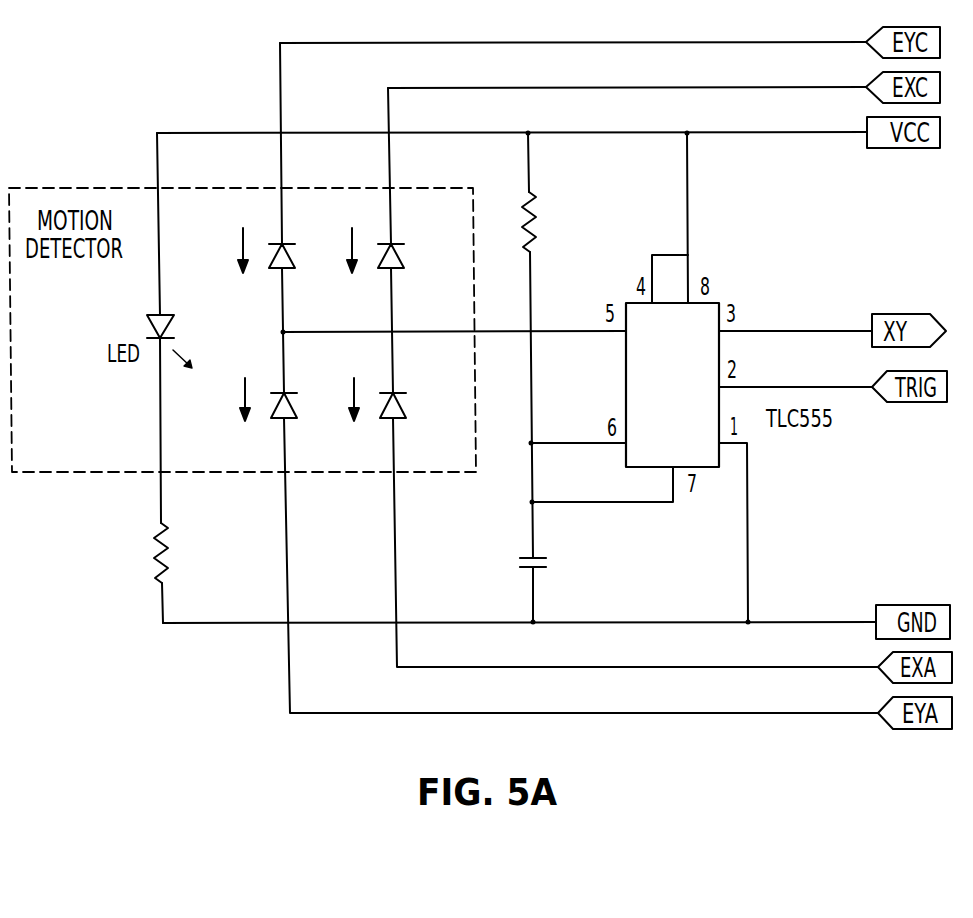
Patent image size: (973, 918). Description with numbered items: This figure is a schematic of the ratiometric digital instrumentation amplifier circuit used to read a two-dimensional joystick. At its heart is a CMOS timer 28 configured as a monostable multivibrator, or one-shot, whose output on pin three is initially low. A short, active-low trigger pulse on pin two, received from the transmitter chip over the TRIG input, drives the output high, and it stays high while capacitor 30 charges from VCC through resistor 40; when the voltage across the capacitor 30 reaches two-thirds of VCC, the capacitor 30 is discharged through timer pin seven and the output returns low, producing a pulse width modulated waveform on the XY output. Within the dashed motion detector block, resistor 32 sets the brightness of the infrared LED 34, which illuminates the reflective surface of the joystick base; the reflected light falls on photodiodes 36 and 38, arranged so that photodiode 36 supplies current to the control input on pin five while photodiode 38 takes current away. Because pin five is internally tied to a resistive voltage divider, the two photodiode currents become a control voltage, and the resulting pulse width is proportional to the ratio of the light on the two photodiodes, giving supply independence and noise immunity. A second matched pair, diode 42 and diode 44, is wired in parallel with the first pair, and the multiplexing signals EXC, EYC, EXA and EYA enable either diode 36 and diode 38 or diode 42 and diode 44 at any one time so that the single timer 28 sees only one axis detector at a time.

The CMOS 555 timer 28 is at (687, 385).
The capacitor 30 is at (551, 558).
The resistor 32 is at (184, 541).
The infrared LED 34 is at (151, 327).
The photodiode 36 is at (295, 243).
The photodiode 38 is at (298, 394).
The resistor 40 is at (551, 212).
The diode 42 is at (405, 243).
The diode 44 is at (411, 394).